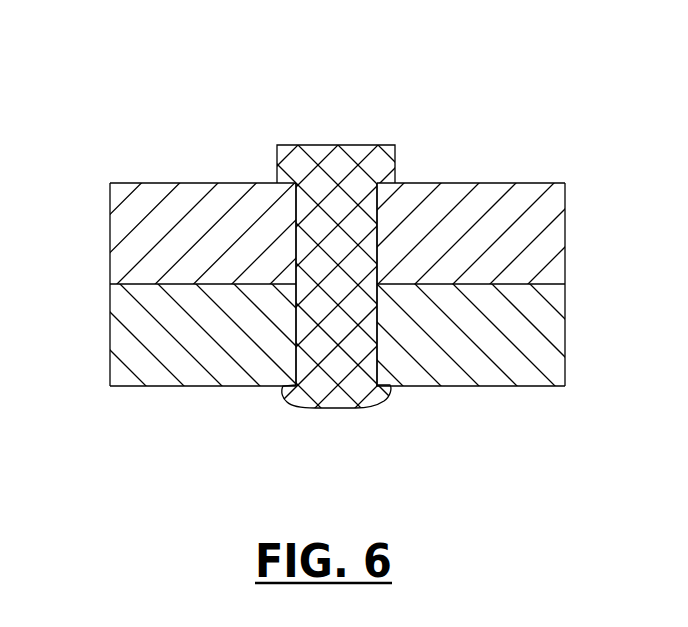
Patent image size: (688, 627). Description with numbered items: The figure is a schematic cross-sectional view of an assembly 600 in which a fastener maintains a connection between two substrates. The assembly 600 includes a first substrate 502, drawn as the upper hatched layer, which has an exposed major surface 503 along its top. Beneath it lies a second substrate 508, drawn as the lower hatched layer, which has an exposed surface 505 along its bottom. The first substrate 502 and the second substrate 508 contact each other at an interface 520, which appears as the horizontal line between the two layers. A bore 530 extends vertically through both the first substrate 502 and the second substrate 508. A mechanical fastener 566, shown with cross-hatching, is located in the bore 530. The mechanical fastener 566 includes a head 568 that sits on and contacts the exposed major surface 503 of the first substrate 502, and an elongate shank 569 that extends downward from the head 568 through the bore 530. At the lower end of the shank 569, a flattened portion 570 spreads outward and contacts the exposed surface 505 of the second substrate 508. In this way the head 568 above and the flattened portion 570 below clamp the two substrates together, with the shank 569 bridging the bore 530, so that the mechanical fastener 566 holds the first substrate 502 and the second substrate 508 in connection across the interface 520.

The assembly 600 is at (104, 66).
The first substrate 502 is at (120, 237).
The exposed major surface 503 is at (168, 183).
The exposed surface 505 is at (192, 388).
The second substrate 508 is at (125, 350).
The interface 520 is at (565, 284).
The bore 530 is at (296, 204).
The mechanical fastener 566 is at (336, 110).
The head 568 is at (385, 160).
The elongate shank 569 is at (338, 285).
The flattened portion 570 is at (348, 398).